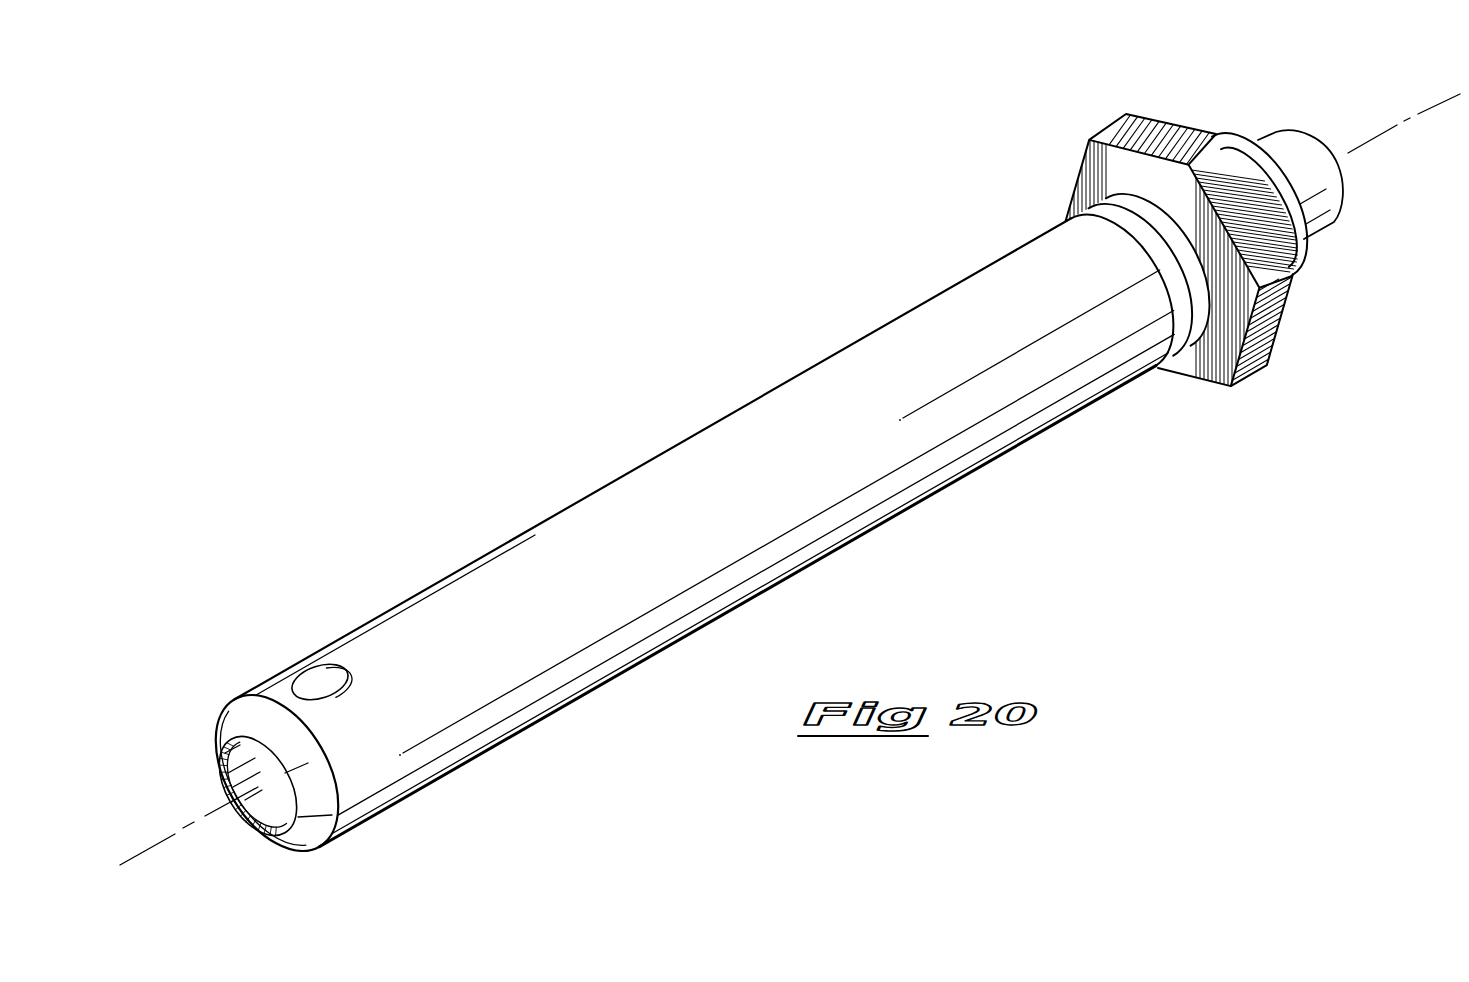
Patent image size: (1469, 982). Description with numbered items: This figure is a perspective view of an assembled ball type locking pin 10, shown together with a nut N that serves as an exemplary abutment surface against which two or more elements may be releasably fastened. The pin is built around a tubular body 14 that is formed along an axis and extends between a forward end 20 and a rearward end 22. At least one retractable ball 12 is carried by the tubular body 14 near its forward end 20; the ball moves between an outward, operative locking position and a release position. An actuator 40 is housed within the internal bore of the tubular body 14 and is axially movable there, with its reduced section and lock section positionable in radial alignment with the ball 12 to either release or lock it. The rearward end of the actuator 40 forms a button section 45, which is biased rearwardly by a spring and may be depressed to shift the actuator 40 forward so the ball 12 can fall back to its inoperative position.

The ball type locking pin 10 is at (790, 475).
The retractable ball 12 is at (310, 683).
The tubular body 14 is at (566, 496).
The forward end 20 is at (357, 814).
The rearward end 22 is at (1307, 250).
The actuator 40 is at (262, 806).
The button section 45 is at (1309, 162).
The nut N is at (1178, 140).